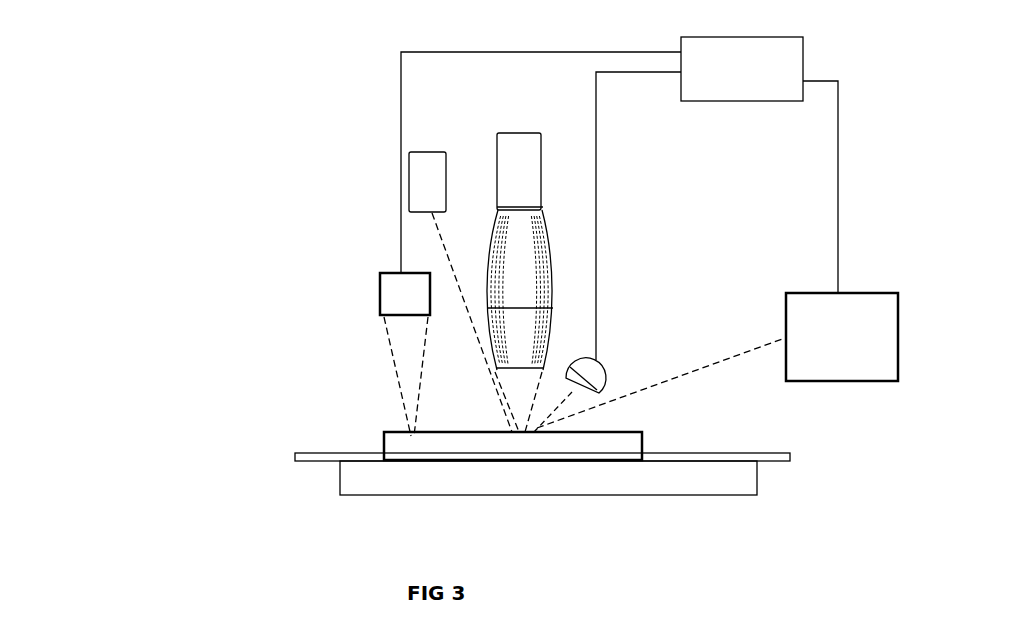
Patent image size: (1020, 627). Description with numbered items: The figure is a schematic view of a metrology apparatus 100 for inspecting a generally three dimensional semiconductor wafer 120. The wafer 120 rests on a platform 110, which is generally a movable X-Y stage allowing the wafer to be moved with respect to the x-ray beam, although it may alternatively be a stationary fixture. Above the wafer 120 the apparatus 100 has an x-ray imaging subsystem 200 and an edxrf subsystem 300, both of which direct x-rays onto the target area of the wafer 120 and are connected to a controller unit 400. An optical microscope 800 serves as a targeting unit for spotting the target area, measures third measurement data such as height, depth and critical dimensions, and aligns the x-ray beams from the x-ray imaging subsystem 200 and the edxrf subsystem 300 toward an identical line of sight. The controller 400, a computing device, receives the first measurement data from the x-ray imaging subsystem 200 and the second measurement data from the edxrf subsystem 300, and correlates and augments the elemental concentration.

The metrology apparatus 100 is at (144, 86).
The platform 110 is at (342, 473).
The semiconductor wafer 120 is at (593, 432).
The x-ray imaging subsystem 200 is at (486, 164).
The edxrf subsystem 300 is at (420, 236).
The controller unit 400 is at (772, 46).
The optical microscope 800 is at (355, 342).